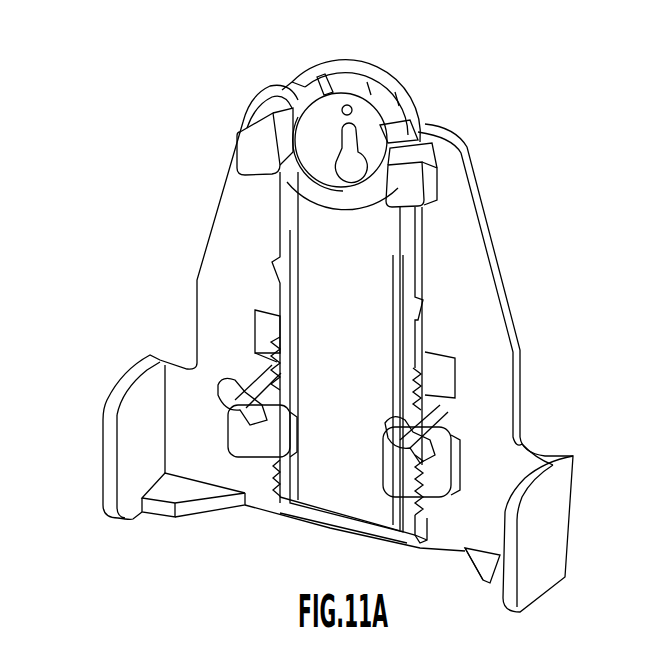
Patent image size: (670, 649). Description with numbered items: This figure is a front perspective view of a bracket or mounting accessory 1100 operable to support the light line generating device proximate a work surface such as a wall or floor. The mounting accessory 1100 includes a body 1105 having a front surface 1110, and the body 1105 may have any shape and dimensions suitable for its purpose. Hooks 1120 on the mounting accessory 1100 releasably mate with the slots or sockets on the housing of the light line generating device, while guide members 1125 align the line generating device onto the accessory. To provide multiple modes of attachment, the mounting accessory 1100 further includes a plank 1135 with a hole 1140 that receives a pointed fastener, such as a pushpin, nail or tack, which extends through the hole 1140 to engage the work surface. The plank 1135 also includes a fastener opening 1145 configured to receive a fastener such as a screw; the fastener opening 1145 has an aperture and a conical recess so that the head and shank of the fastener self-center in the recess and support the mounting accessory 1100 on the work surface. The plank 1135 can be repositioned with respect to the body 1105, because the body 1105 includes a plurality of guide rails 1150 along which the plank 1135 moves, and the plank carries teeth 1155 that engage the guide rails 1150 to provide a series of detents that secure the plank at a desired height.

The mounting accessory 1100 is at (494, 128).
The body 1105 is at (95, 455).
The front surface 1110 is at (463, 290).
The hooks 1120 is at (410, 443).
The guide members 1125 is at (550, 517).
The plank 1135 is at (368, 361).
The hole 1140 is at (340, 112).
The fastener opening 1145 is at (382, 152).
The guide rails 1150 is at (263, 153).
The teeth 1155 is at (428, 518).